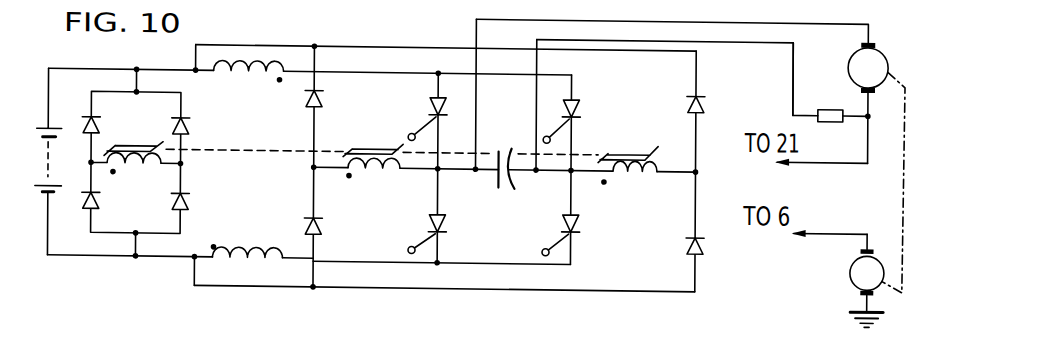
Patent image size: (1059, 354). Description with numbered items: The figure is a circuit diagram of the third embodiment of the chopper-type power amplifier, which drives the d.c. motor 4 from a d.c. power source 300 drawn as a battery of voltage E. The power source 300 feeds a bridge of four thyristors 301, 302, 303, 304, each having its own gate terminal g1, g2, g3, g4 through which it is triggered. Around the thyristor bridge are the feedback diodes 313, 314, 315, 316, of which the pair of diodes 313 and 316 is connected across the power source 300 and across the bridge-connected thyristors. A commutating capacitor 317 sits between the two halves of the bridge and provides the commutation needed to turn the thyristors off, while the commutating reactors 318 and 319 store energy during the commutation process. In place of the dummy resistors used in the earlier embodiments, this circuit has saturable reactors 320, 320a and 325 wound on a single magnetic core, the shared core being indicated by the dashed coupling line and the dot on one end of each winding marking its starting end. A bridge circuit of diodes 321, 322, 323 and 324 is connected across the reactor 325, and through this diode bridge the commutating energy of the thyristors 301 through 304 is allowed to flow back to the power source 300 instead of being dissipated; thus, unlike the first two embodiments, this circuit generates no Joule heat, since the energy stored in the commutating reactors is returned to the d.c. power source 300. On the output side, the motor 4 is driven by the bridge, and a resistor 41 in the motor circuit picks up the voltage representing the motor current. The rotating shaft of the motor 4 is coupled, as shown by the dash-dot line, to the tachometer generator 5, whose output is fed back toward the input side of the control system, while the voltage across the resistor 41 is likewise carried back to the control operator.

The d.c. power source 300 is at (66, 163).
The battery voltage E is at (58, 121).
The thyristor 301 is at (437, 101).
The thyristor 302 is at (443, 223).
The thyristor 303 is at (577, 106).
The thyristor 304 is at (579, 221).
The gate terminal g1 is at (410, 123).
The gate terminal g2 is at (409, 239).
The gate terminal g3 is at (554, 120).
The gate terminal g4 is at (544, 242).
The feedback diode 313 is at (321, 111).
The feedback diode 314 is at (322, 231).
The feedback diode 315 is at (701, 101).
The feedback diode 316 is at (703, 251).
The commutating capacitor 317 is at (506, 150).
The commutating reactor 318 is at (246, 84).
The commutating reactor 319 is at (249, 251).
The saturable reactor 320 is at (378, 180).
The saturable reactor 320a is at (633, 176).
The diode 321 is at (99, 130).
The diode 322 is at (97, 206).
The diode 323 is at (184, 130).
The diode 324 is at (187, 204).
The saturable reactor 325 is at (135, 177).
The d.c. motor 4 is at (882, 47).
The resistor 41 is at (822, 102).
The tachometer generator 5 is at (850, 270).